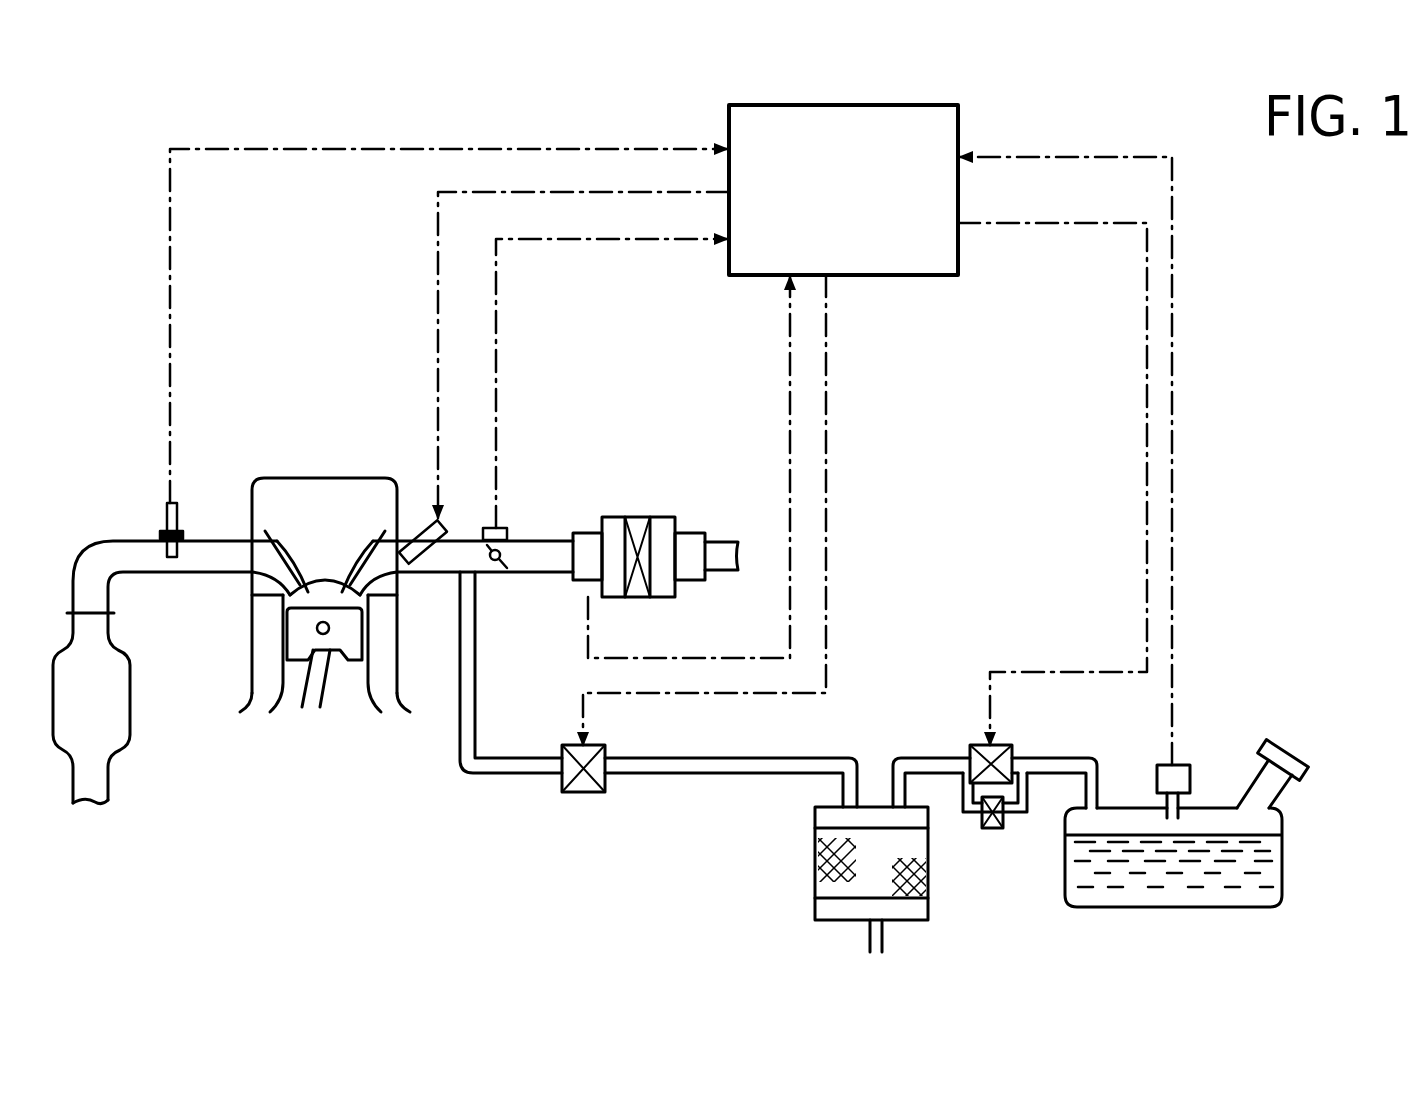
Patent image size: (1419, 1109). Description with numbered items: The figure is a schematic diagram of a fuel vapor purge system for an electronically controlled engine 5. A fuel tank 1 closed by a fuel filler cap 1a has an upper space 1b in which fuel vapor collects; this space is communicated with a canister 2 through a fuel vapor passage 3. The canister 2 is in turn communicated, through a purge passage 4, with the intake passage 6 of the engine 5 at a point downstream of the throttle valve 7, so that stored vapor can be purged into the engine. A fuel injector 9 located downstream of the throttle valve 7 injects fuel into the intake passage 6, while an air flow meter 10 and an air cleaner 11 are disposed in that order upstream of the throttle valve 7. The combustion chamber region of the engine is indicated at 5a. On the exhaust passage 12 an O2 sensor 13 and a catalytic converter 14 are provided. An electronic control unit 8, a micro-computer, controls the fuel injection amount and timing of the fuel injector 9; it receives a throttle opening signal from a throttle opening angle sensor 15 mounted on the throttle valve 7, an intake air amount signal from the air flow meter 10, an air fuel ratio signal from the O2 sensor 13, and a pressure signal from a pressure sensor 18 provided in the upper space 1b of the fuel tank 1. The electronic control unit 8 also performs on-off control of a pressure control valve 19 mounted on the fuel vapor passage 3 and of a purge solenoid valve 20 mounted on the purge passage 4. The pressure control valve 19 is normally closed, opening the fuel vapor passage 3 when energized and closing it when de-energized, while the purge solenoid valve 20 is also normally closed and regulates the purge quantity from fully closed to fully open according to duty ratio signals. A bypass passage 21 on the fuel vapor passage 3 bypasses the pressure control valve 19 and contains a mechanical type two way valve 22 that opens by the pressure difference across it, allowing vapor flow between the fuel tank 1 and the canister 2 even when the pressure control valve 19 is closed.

The fuel tank 1 is at (1285, 872).
The fuel filler cap 1a is at (1285, 752).
The upper space 1b is at (1185, 828).
The canister 2 is at (805, 903).
The fuel vapor passage 3 is at (918, 757).
The purge passage 4 is at (683, 775).
The engine 5 is at (258, 478).
The combustion chamber 5a is at (346, 556).
The intake passage 6 is at (535, 540).
The throttle valve 7 is at (500, 570).
The electronic control unit 8 is at (903, 277).
The fuel injector 9 is at (418, 525).
The air flow meter 10 is at (586, 533).
The air cleaner 11 is at (640, 517).
The exhaust passage 12 is at (110, 540).
The O2 sensor 13 is at (163, 521).
The catalytic converter 14 is at (132, 713).
The throttle opening angle sensor 15 is at (487, 528).
The pressure sensor 18 is at (1155, 778).
The pressure control valve 19 is at (975, 745).
The purge solenoid valve 20 is at (585, 795).
The bypass passage 21 is at (1030, 795).
The mechanical type two way valve 22 is at (990, 830).